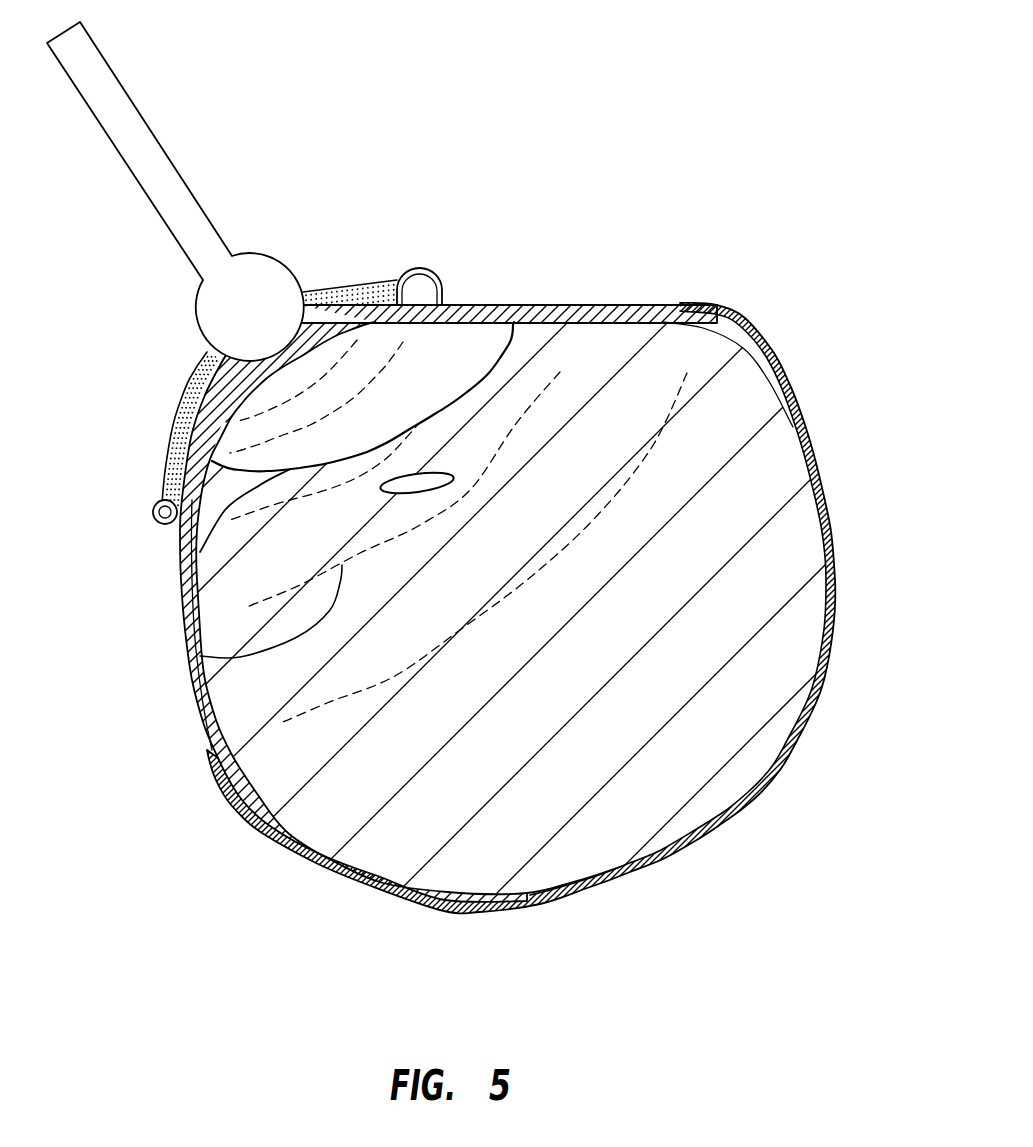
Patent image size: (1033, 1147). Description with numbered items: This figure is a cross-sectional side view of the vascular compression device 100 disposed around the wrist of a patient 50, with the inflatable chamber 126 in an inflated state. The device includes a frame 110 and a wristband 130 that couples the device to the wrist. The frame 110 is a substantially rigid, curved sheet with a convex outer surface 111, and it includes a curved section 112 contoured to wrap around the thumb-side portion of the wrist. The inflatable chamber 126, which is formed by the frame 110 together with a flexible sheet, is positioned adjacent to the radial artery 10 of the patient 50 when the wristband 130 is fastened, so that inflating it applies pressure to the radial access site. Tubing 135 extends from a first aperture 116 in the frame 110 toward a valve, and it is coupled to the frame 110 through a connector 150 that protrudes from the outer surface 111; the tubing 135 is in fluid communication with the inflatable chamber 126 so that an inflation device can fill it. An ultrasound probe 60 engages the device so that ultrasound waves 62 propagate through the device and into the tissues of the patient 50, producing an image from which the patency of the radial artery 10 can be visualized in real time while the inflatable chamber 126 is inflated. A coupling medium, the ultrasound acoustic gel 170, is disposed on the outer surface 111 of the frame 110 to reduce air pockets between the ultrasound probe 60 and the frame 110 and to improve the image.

The radial artery 10 is at (428, 505).
The patient 50 is at (606, 665).
The ultrasound probe 60 is at (147, 137).
The ultrasound waves 62 is at (200, 656).
The vascular compression device 100 is at (516, 555).
The frame 110 is at (190, 392).
The outer surface 111 is at (450, 307).
The curved section 112 is at (225, 426).
The first aperture 116 is at (424, 300).
The inflatable chamber 126 is at (520, 343).
The wristband 130 is at (845, 522).
The tubing 135 is at (205, 375).
The connector 150 is at (400, 282).
The ultrasound acoustic gel 170 is at (172, 482).